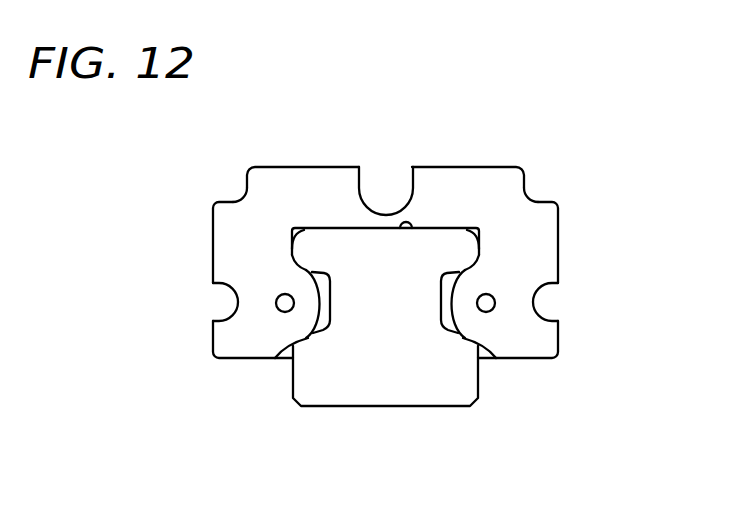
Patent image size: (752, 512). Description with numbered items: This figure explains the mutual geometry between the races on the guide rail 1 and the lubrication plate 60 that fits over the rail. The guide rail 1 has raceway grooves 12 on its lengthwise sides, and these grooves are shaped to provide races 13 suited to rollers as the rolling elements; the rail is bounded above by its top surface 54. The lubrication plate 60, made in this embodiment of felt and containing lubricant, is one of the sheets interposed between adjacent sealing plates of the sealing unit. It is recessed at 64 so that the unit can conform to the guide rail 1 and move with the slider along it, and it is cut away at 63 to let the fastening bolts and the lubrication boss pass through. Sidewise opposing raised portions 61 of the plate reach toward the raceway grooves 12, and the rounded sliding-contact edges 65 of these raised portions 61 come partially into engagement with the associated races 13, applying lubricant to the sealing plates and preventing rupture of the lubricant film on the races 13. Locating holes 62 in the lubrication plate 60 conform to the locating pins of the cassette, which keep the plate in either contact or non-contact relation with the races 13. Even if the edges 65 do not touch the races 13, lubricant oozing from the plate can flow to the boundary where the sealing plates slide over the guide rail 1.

The guide rail 1 is at (423, 373).
The raceway groove 12 is at (447, 272).
The race 13 is at (310, 300).
The top surface 54 is at (407, 233).
The lubrication plate 60 is at (496, 165).
The raised portion 61 is at (305, 268).
The locating hole 62 is at (277, 307).
The cut-away 63 is at (238, 194).
The recess 64 is at (366, 231).
The sliding-contact edge 65 is at (313, 268).